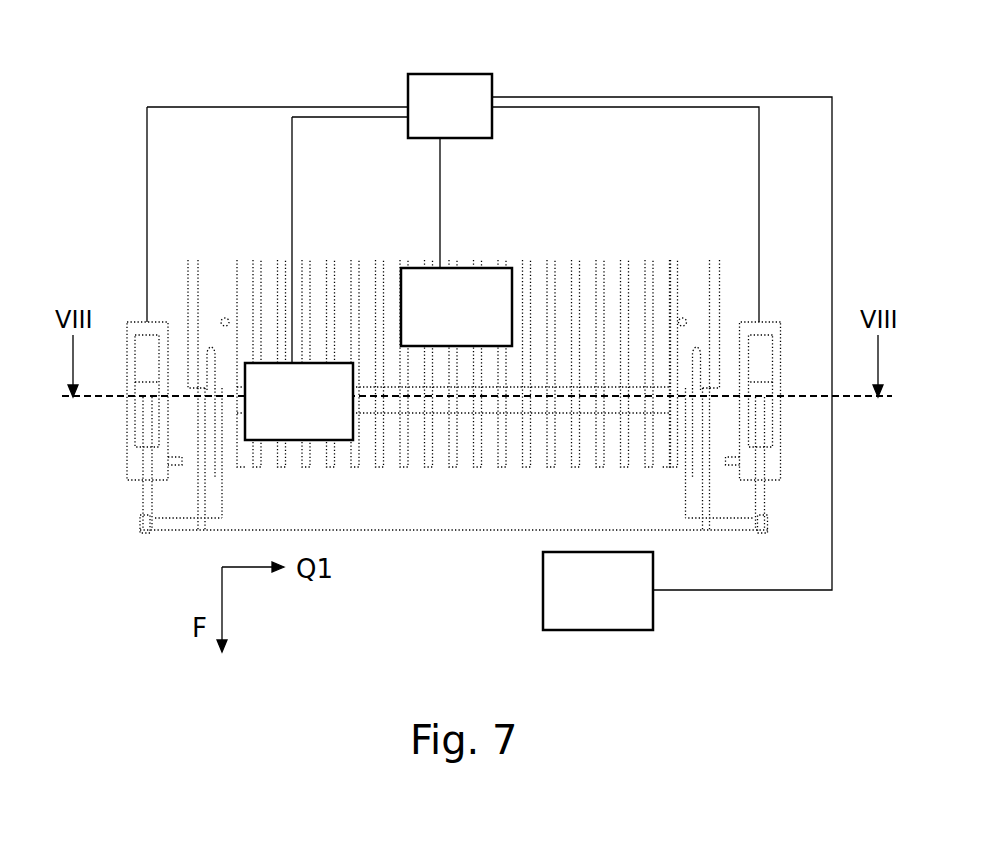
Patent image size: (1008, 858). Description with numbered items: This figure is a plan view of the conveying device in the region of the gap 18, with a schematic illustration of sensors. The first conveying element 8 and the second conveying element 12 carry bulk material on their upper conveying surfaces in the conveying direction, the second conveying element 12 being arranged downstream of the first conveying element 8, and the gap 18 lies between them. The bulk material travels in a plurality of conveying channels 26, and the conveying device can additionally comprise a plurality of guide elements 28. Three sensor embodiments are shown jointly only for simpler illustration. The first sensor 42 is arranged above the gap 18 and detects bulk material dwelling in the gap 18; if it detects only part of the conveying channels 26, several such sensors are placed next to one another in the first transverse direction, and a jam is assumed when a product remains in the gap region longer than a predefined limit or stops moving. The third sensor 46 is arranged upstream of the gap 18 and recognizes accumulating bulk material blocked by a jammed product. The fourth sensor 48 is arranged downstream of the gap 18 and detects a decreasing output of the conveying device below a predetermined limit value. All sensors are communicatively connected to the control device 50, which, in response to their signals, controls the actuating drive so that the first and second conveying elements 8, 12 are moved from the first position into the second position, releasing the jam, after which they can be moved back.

The first conveying element 8 is at (232, 288).
The second conveying element 12 is at (240, 513).
The gap 18 is at (638, 386).
The conveying channels 26 is at (594, 265).
The guide elements 28 is at (655, 265).
The first sensor 42 is at (303, 423).
The third sensor 46 is at (475, 278).
The fourth sensor 48 is at (606, 615).
The control device 50 is at (468, 88).